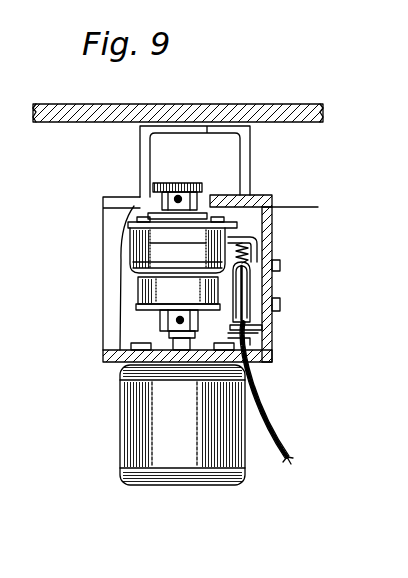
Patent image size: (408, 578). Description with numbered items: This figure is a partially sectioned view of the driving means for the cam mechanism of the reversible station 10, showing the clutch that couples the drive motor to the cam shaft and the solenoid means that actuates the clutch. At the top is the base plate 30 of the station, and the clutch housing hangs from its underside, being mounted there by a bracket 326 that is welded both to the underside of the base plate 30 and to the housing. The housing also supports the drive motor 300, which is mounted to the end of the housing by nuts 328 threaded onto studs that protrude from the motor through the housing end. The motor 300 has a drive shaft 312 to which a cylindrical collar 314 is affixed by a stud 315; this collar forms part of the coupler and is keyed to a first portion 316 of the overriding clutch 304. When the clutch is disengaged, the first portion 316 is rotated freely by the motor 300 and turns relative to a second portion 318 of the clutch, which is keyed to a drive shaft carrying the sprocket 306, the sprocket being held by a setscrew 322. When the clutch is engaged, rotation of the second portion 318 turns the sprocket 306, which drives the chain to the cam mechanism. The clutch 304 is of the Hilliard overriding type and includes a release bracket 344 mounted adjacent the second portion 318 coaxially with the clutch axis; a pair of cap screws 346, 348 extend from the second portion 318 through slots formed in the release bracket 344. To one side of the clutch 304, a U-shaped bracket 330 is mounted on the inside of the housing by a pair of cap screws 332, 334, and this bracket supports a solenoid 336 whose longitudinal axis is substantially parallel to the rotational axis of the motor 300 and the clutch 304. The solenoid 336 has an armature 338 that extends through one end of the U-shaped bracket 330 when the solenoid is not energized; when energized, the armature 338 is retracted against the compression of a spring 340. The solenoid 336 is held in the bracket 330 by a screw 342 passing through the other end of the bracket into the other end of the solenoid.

The reversible station 10 is at (52, 116).
The base plate 30 is at (260, 111).
The drive motor 300 is at (142, 397).
The overriding clutch 304 is at (130, 263).
The sprocket 306 is at (181, 197).
The drive shaft 312 is at (169, 339).
The cylindrical collar 314 is at (143, 294).
The stud 315 is at (176, 320).
The first portion of the clutch 316 is at (131, 268).
The second portion of the clutch 318 is at (128, 237).
The setscrew 322 is at (181, 176).
The bracket 326 is at (253, 158).
The nuts 328 is at (226, 348).
The U-shaped bracket 330 is at (268, 284).
The cap screw 332 is at (280, 265).
The cap screw 334 is at (280, 305).
The solenoid 336 is at (250, 322).
The armature 338 is at (248, 256).
The spring 340 is at (263, 240).
The screw 342 is at (256, 345).
The release bracket 344 is at (251, 201).
The cap screw 346 is at (219, 207).
The cap screw 348 is at (145, 215).